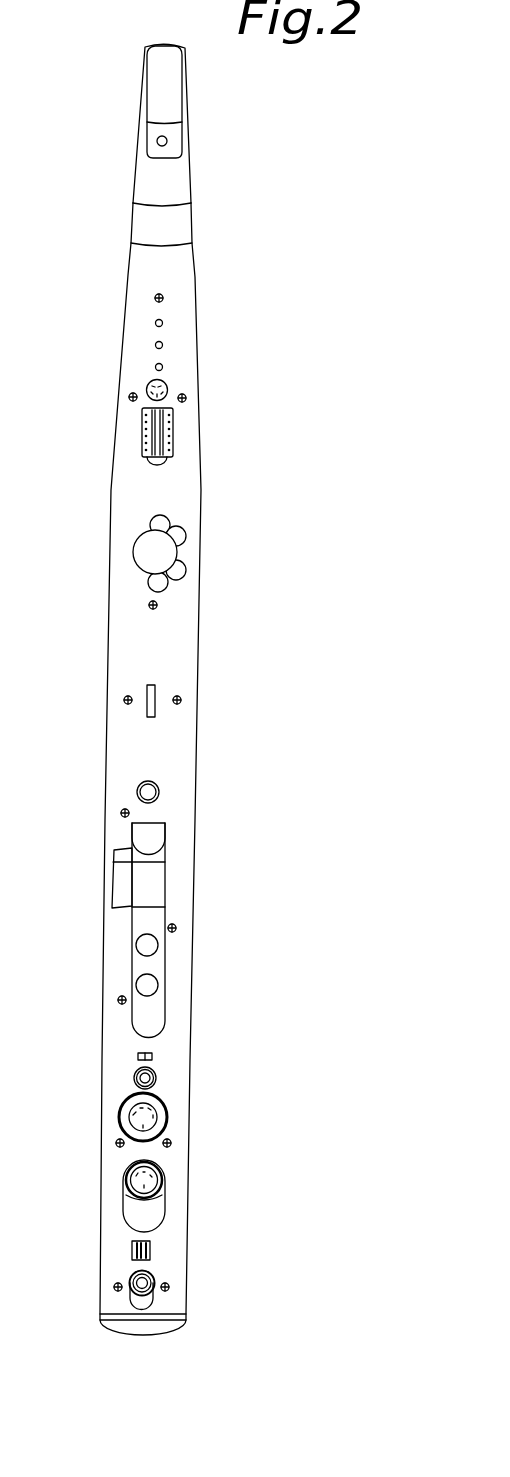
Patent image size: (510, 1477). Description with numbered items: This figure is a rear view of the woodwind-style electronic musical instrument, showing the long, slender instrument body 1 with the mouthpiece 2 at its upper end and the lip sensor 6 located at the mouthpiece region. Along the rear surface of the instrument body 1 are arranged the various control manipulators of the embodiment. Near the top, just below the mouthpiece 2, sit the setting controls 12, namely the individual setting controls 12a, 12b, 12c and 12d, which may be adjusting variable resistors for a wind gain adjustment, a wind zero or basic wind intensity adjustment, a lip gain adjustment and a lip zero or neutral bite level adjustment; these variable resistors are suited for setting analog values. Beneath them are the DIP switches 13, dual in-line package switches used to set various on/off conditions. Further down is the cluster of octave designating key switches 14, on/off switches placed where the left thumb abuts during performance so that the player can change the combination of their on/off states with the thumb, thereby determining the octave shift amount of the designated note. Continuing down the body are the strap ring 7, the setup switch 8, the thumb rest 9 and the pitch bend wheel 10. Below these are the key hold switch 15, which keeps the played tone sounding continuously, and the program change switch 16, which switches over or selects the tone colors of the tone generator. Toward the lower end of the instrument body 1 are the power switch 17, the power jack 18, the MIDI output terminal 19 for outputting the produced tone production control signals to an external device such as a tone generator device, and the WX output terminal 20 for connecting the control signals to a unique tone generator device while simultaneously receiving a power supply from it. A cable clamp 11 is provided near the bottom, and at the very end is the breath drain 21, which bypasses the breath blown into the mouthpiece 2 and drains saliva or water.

The instrument body 1 is at (145, 270).
The mouthpiece 2 is at (138, 183).
The lip sensor 6 is at (172, 86).
The strap ring 7 is at (155, 695).
The setup switch 8 is at (160, 790).
The thumb rest 9 is at (155, 833).
The pitch bend wheel 10 is at (120, 872).
The cable clamp 11 is at (150, 1252).
The setting controls 12 is at (260, 355).
The setting control 12a is at (163, 323).
The setting control 12b is at (163, 345).
The setting control 12c is at (163, 367).
The setting control 12d is at (213, 406).
The DIP switches 13 is at (173, 442).
The octave designating key switches 14 is at (217, 522).
The key hold switch 15 is at (152, 945).
The program change switch 16 is at (152, 985).
The power switch 17 is at (152, 1057).
The power jack 18 is at (156, 1075).
The MIDI output terminal 19 is at (168, 1120).
The WX output terminal 20 is at (153, 1208).
The breath drain 21 is at (153, 1300).